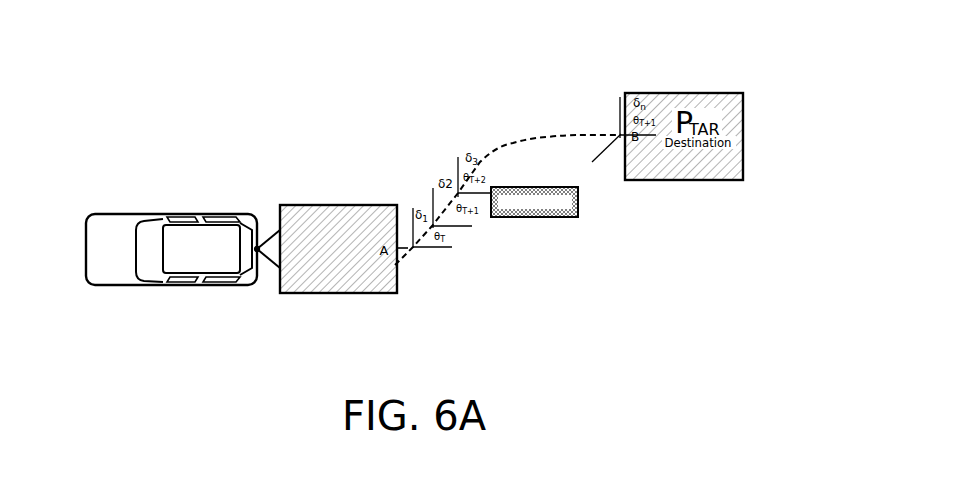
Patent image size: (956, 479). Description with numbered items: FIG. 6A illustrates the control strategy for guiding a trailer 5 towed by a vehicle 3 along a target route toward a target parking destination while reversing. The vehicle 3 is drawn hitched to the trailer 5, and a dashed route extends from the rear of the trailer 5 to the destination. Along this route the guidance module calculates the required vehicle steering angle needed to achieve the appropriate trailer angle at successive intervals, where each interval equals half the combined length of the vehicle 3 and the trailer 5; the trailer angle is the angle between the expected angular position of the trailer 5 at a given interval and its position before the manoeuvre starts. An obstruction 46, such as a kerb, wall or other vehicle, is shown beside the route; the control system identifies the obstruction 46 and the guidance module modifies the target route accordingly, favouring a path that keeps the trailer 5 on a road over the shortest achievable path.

The vehicle 3 is at (180, 268).
The trailer 5 is at (337, 268).
The obstruction 46 is at (542, 217).